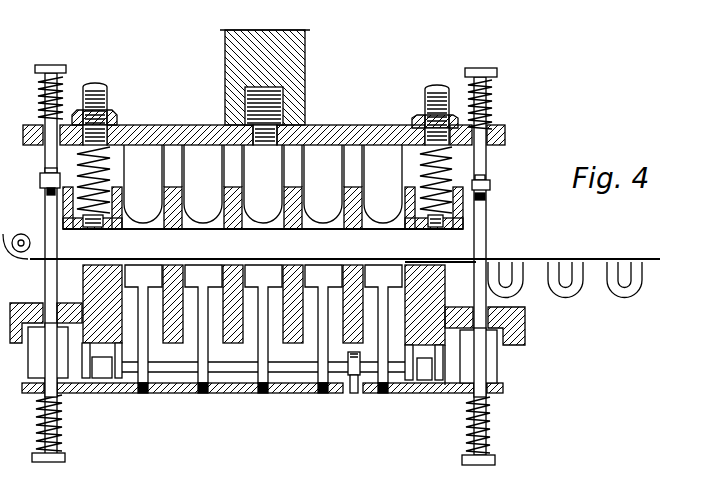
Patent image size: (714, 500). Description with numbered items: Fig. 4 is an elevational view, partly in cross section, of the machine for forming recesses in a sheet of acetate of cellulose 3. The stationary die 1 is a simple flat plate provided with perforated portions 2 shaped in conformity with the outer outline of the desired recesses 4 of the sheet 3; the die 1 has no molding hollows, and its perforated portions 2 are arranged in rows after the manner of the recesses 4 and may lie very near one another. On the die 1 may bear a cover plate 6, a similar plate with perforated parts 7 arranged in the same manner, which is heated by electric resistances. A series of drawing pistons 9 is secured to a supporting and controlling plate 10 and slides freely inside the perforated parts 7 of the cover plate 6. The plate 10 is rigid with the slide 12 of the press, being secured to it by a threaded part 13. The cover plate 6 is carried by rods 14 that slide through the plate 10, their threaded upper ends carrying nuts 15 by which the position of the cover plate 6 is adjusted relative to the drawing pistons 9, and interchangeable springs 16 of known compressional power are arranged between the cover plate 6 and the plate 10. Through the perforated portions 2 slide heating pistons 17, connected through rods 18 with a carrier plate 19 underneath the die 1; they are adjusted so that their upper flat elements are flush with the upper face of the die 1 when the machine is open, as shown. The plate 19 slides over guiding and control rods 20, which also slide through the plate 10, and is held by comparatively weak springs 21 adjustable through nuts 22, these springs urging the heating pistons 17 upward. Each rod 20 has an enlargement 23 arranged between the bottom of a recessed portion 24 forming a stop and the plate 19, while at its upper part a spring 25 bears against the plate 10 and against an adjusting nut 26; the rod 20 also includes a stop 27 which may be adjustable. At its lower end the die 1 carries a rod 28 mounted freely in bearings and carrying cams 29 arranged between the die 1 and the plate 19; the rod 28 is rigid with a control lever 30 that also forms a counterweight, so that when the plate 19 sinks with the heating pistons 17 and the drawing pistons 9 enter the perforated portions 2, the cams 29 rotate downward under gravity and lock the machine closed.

The stationary die 1 is at (431, 281).
The perforated portions 2 is at (401, 295).
The sheet of acetate of cellulose 3 is at (471, 261).
The recesses 4 is at (566, 299).
The cover plate 6 is at (463, 225).
The perforated parts 7 is at (393, 231).
The drawing pistons 9 is at (381, 160).
The supporting and controlling plate 10 is at (188, 133).
The slide 12 is at (290, 66).
The threaded part 13 is at (283, 103).
The rods 14 is at (92, 155).
The nuts 15 is at (114, 113).
The interchangeable springs 16 is at (54, 194).
The heating pistons 17 is at (138, 273).
The rods 18 is at (249, 394).
The carrier plate 19 is at (341, 394).
The guiding and control rods 20 is at (481, 164).
The springs 21 is at (61, 438).
The nuts 22 is at (33, 462).
The enlargement 23 is at (488, 374).
The recessed portion 24 is at (500, 330).
The spring 25 is at (493, 106).
The adjusting nut 26 is at (493, 73).
The stop 27 is at (491, 184).
The rod 28 is at (310, 369).
The cams 29 is at (422, 383).
The control lever 30 is at (354, 372).